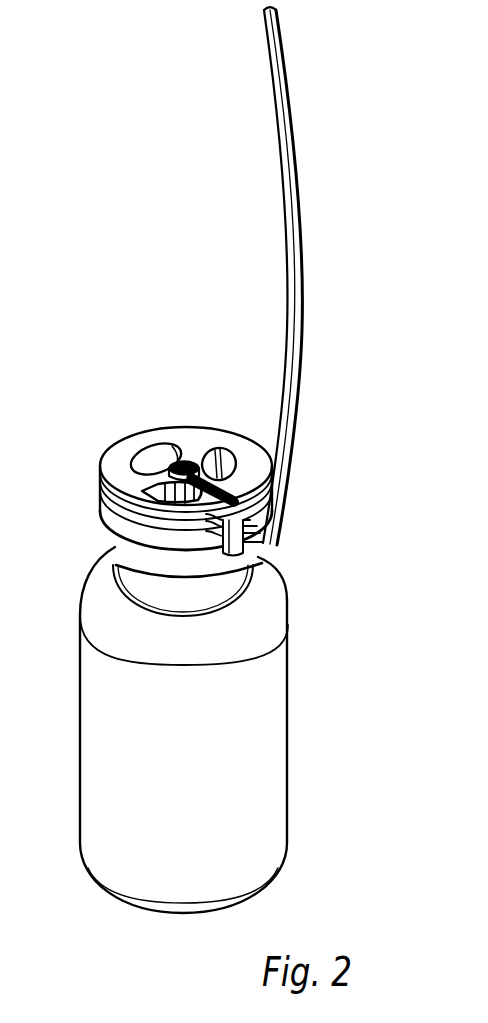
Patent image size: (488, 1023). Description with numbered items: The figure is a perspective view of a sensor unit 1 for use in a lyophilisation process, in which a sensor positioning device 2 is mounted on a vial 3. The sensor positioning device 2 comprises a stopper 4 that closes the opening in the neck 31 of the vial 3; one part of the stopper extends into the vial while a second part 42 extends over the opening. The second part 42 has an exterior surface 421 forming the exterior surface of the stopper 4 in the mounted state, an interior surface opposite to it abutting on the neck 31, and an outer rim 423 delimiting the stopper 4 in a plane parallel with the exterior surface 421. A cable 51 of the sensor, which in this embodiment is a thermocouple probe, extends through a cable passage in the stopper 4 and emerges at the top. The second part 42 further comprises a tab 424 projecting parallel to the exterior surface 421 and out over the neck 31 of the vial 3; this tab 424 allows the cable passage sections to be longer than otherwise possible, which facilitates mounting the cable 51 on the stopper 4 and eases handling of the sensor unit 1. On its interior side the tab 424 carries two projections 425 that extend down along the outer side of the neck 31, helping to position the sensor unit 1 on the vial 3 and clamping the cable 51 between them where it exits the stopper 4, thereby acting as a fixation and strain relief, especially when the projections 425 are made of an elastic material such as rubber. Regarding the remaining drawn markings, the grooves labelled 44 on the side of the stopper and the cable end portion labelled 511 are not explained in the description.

The sensor unit 1 is at (127, 400).
The sensor positioning device 2 is at (110, 437).
The vial 3 is at (148, 914).
The neck 31 is at (152, 587).
The stopper 4 is at (190, 467).
The second part 42 is at (167, 370).
The exterior surface 421 is at (180, 445).
The outer rim 423 is at (153, 522).
The tab 424 is at (263, 492).
The projections 425 is at (262, 548).
The cap side wall grooves 44 is at (100, 537).
The cable 51 is at (228, 276).
The strap end plug 511 is at (208, 462).